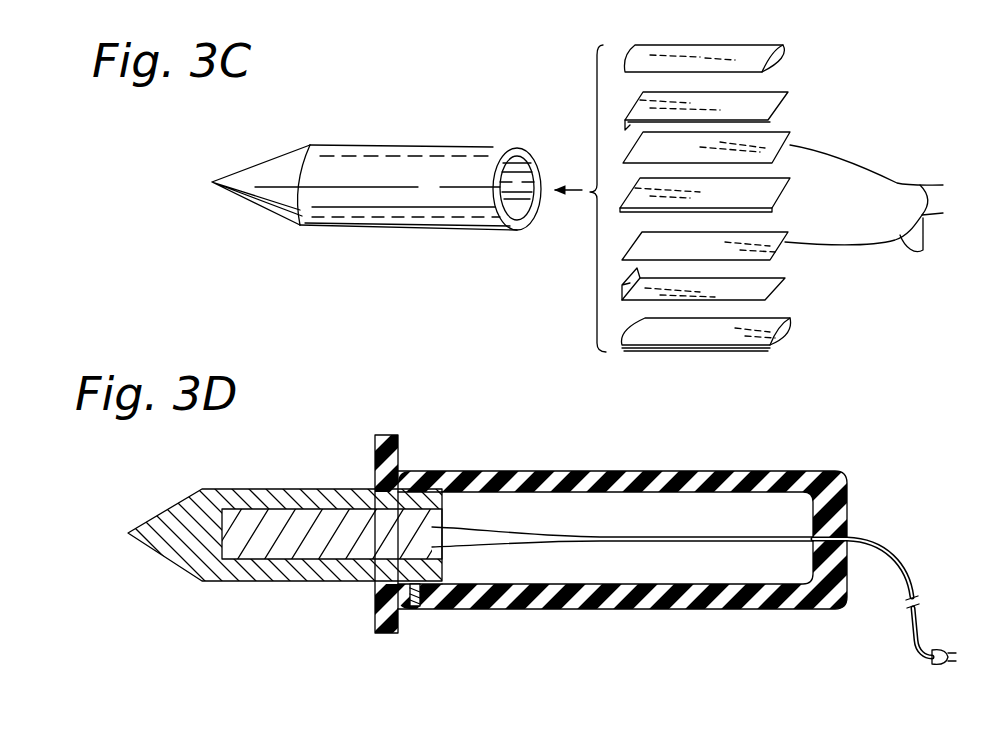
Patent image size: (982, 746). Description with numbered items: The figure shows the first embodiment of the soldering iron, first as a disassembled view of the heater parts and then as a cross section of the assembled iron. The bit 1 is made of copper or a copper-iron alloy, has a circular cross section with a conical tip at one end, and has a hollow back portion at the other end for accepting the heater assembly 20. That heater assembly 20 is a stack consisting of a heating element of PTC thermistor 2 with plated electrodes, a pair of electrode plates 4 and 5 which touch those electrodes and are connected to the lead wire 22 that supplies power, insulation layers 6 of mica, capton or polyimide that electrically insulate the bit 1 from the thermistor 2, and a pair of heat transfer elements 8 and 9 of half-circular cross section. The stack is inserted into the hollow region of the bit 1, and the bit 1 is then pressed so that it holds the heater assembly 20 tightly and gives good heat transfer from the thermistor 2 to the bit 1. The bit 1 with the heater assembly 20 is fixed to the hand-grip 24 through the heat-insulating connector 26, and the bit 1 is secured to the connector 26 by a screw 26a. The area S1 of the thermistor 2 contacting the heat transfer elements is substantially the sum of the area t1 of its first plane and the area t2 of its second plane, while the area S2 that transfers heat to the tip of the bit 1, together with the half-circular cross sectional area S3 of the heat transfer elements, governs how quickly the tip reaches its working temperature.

In FIG. 3C, the bit 1 is at (376, 162).
In FIG. 3D, the bit 1 is at (327, 488).
In FIG. 3C, the heater assembly 20 is at (590, 97).
In FIG. 3D, the heater assembly 20 is at (312, 548).
In FIG. 3C, the heating element of PTC thermistor 2 is at (708, 212).
In FIG. 3C, the electrode plate 4 is at (786, 137).
In FIG. 3C, the electrode plate 5 is at (782, 236).
In FIG. 3C, the insulation layer 6 is at (785, 102).
In FIG. 3C, the heat transfer element 8 is at (730, 53).
In FIG. 3C, the heat transfer element 9 is at (795, 325).
In FIG. 3C, the lead wire 22 is at (871, 214).
In FIG. 3D, the lead wire 22 is at (882, 538).
In FIG. 3D, the hand-grip 24 is at (627, 600).
In FIG. 3D, the connector 26 is at (566, 541).
In FIG. 3D, the screw 26a is at (422, 608).
In FIG. 3C, the area of the thermistor contacting the heat transfer elements S1 is at (517, 164).
In FIG. 3C, the area which transfers the heat to the tip of the bit S2 is at (783, 52).
In FIG. 3C, the half-circular cross sectional area of heat transfer element S3 is at (785, 342).
In FIG. 3C, the area of the first plane of the PTC thermistor t1 is at (655, 210).
In FIG. 3C, the area of the second plane of the PTC thermistor t2 is at (703, 214).